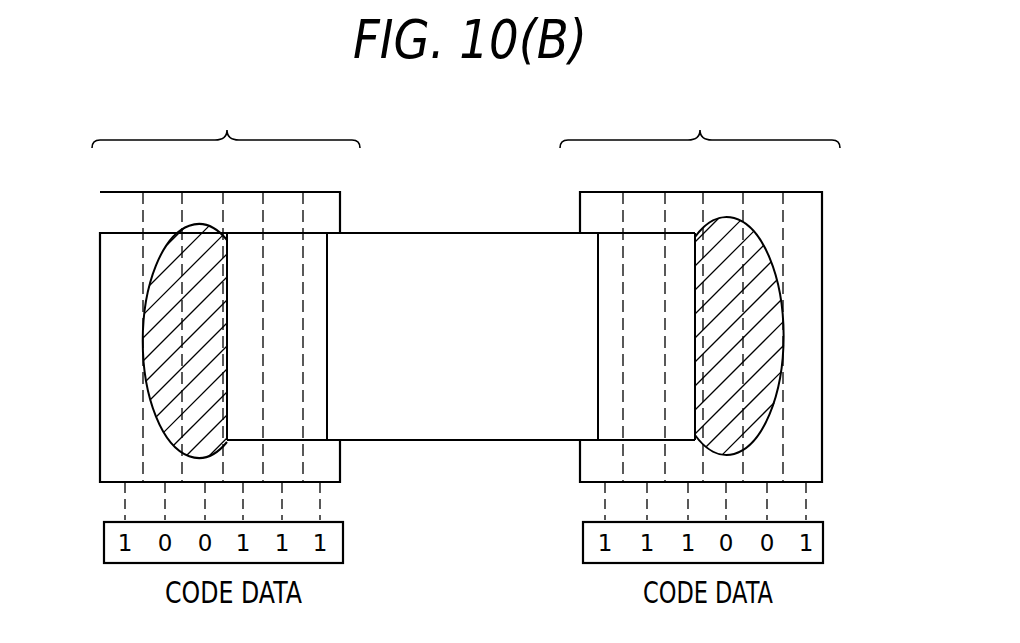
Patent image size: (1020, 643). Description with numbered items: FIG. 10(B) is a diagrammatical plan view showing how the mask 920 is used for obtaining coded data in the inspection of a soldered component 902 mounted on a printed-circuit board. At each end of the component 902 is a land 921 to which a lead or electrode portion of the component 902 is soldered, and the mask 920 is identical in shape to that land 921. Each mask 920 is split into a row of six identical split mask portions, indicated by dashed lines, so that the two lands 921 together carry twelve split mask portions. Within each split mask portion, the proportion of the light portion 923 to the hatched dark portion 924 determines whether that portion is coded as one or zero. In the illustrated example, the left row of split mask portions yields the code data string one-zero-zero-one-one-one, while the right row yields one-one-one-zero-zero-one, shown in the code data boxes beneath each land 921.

The component 902 is at (460, 441).
The mask 920 is at (466, 139).
The land 921 is at (115, 240).
The light portion 923 is at (808, 320).
The dark portion 924 is at (765, 405).